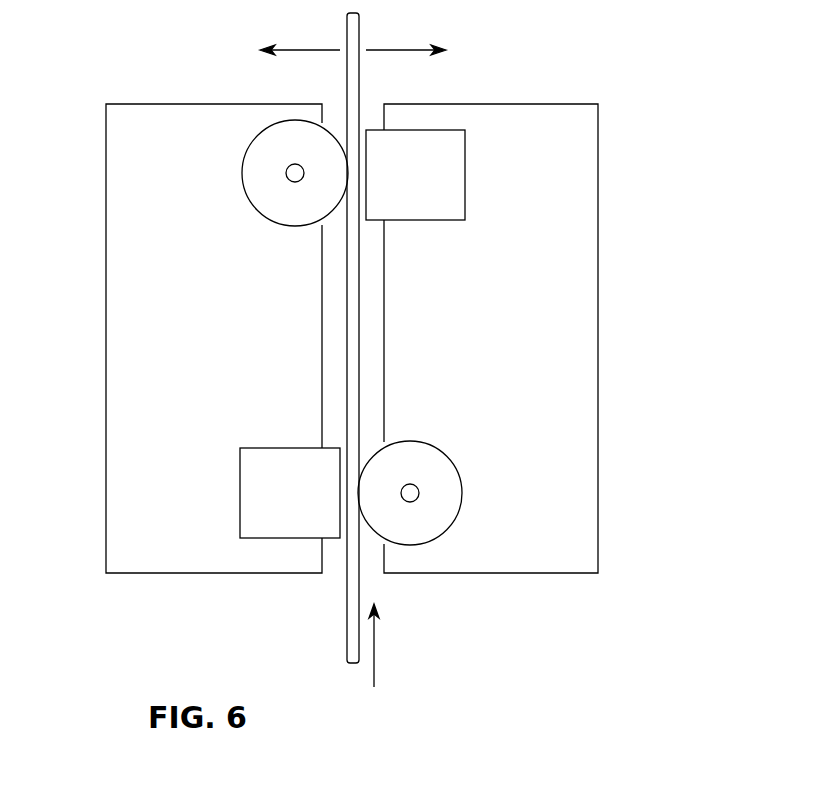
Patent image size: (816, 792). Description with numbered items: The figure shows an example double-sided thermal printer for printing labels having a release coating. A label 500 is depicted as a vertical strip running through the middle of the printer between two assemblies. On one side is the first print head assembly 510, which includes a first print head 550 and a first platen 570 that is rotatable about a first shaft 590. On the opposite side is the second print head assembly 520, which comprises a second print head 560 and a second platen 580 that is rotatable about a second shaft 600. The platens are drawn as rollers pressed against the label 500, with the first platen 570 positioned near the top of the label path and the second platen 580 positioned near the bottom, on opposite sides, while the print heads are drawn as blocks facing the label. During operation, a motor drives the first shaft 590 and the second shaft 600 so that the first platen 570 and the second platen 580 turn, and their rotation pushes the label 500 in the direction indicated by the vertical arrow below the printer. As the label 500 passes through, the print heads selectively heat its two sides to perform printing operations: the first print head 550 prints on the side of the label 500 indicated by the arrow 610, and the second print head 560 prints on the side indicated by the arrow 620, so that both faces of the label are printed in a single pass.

The label 500 is at (346, 610).
The first print head assembly 510 is at (124, 463).
The second print head assembly 520 is at (578, 371).
The first print head 550 is at (275, 501).
The second print head 560 is at (400, 183).
The first platen 570 is at (259, 149).
The second platen 580 is at (412, 453).
The first shaft 590 is at (288, 180).
The second shaft 600 is at (419, 491).
The arrow 610 is at (276, 50).
The arrow 620 is at (429, 50).